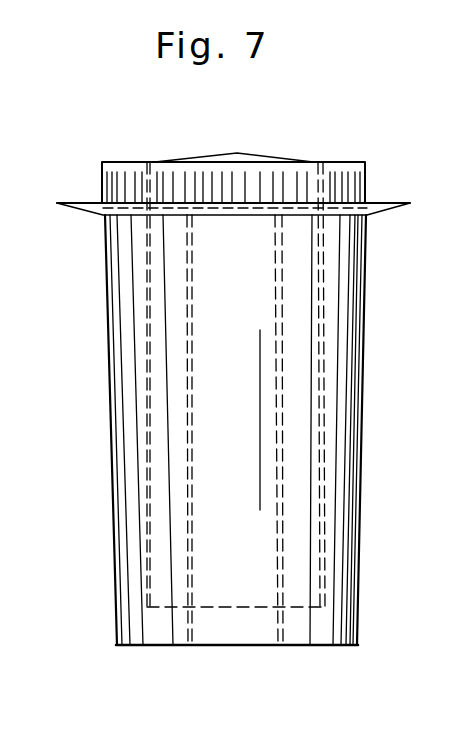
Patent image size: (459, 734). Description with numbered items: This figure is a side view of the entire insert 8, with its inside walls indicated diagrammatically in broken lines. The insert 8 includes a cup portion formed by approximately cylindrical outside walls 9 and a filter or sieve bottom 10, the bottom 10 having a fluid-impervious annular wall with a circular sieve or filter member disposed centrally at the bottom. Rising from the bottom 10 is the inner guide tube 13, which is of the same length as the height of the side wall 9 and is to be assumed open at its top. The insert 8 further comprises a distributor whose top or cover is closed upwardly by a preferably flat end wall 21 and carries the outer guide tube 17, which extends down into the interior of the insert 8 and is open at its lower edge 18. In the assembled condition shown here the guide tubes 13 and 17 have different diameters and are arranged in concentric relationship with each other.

The insert 8 is at (366, 382).
The outside walls 9 is at (105, 310).
The filter or sieve bottom 10 is at (337, 645).
The inner guide tube 13 is at (273, 300).
The outer guide tube 17 is at (320, 510).
The lower edge 18 is at (293, 607).
The end wall 21 is at (267, 163).